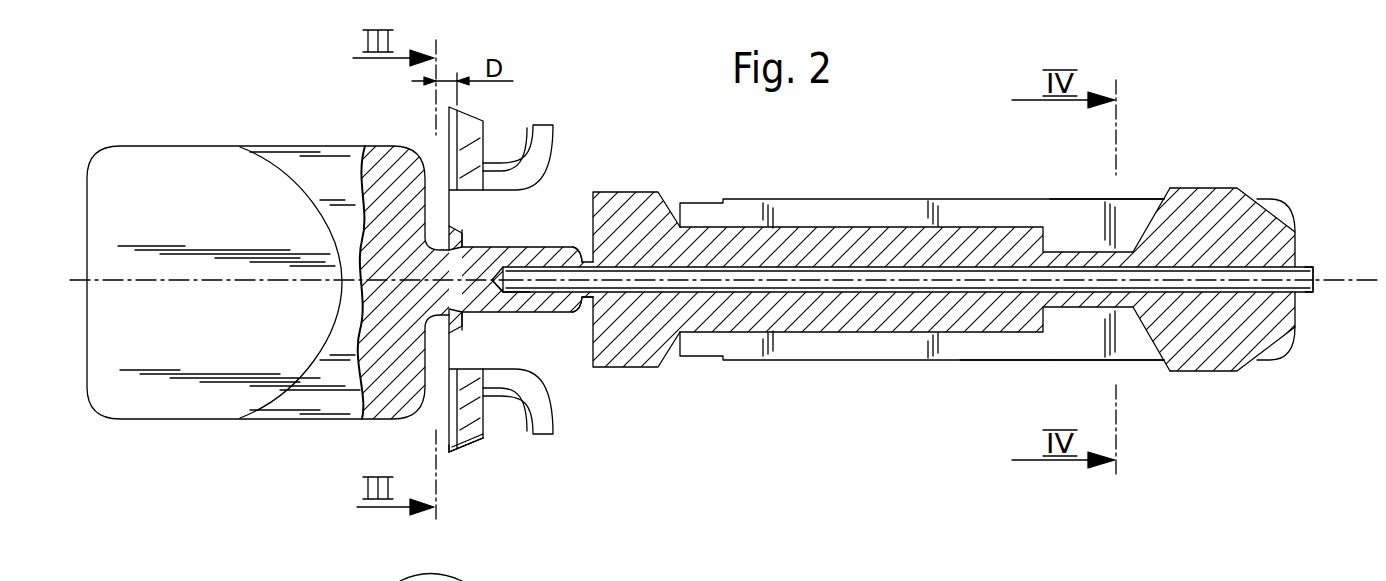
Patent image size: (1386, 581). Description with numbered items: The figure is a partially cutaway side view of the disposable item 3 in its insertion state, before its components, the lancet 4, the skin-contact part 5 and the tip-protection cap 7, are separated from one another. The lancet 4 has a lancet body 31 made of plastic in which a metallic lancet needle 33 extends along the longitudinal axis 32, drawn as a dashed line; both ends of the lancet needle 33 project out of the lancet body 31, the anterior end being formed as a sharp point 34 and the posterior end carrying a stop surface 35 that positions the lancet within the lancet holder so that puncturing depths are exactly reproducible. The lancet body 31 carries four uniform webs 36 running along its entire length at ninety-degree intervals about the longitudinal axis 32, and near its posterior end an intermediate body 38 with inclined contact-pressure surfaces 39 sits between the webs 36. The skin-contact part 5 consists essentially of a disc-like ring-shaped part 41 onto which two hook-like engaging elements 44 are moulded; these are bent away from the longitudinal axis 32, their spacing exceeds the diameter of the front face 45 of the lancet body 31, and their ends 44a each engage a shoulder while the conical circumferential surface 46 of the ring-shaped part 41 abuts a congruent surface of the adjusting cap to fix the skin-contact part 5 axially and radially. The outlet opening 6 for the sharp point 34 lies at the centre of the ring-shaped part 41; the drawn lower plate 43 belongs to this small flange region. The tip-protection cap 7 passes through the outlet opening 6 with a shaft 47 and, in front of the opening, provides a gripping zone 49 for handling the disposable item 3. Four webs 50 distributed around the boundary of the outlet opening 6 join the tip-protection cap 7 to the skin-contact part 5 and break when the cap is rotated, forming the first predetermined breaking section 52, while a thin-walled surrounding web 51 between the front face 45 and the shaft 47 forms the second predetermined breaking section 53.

The disposable item 3 is at (636, 410).
The lancet 4 is at (975, 230).
The skin-contact part 5 is at (447, 411).
The outlet opening 6 is at (482, 226).
The tip-protection cap 7 is at (216, 430).
The lancet body 31 is at (1012, 356).
The longitudinal axis 32 is at (1363, 275).
The lancet needle 33 is at (838, 273).
The sharp point 34 is at (527, 284).
The stop surface 35 is at (1317, 284).
The webs 36 is at (1068, 212).
The intermediate body 38 is at (1210, 196).
The inclined contact-pressure surfaces 39 is at (1154, 211).
The ring-shaped part 41 is at (474, 132).
The lower plate 43 is at (490, 434).
The engaging elements 44 is at (548, 138).
The ends of the engaging elements 44a is at (544, 434).
The front face 45 is at (583, 246).
The conical circumferential surface 46 is at (472, 448).
The shaft 47 is at (515, 256).
The gripping zone 49 is at (205, 165).
The webs 50 is at (460, 580).
The surrounding web 51 is at (588, 300).
The first predetermined breaking section 52 is at (468, 330).
The second predetermined breaking section 53 is at (600, 213).